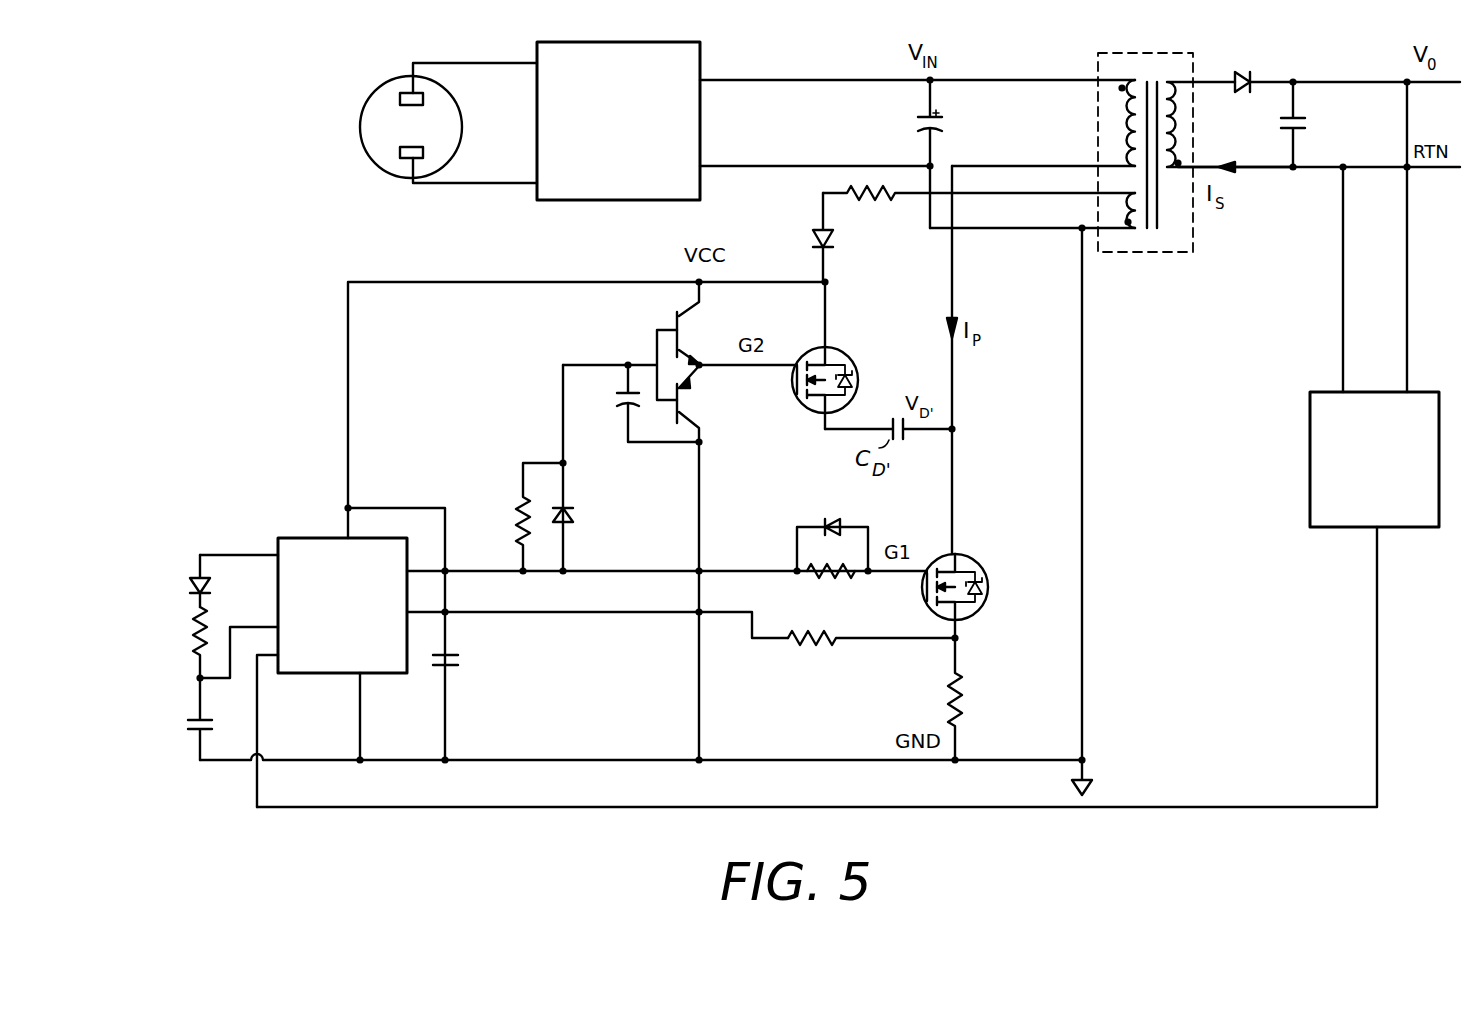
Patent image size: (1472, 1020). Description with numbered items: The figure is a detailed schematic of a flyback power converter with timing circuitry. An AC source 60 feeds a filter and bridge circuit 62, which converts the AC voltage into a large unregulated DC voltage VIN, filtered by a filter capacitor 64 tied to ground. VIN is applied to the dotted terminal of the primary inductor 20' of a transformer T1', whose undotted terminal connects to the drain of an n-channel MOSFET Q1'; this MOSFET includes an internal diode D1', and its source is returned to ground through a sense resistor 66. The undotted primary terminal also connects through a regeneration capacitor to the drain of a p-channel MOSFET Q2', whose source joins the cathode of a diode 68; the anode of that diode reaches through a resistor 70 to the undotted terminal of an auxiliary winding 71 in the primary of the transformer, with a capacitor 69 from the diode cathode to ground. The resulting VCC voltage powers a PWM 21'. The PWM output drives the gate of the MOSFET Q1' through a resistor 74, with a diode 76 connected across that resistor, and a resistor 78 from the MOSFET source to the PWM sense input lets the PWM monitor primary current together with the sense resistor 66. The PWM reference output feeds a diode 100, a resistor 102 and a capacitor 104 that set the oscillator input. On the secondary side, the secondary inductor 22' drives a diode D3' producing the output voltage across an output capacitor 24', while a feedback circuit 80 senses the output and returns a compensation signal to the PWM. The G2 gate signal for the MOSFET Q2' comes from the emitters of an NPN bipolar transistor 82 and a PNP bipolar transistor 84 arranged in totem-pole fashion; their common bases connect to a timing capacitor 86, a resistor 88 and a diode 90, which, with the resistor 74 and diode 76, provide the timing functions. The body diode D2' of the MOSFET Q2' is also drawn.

The AC source 60 is at (375, 92).
The filter and bridge circuit 62 is at (605, 42).
The filter capacitor 64 is at (918, 124).
The sense resistor 66 is at (964, 703).
The diode 68 is at (815, 232).
The capacitor 69 is at (458, 670).
The resistor 70 is at (872, 204).
The auxiliary winding 71 is at (1138, 228).
The resistor 74 is at (834, 584).
The diode 76 is at (832, 517).
The resistor 78 is at (818, 651).
The feedback circuit 80 is at (1327, 392).
The NPN bipolar transistor 82 is at (700, 317).
The PNP bipolar transistor 84 is at (700, 422).
The timing capacitor 86 is at (618, 393).
The resistor 88 is at (518, 526).
The diode 90 is at (572, 512).
The diode 100 is at (190, 578).
The resistor 102 is at (190, 632).
The capacitor 104 is at (188, 725).
The primary inductor 20' is at (1089, 123).
The PWM 21' is at (321, 627).
The secondary inductor 22' is at (1230, 127).
The output capacitor 24' is at (1325, 124).
The transformer T1' is at (1168, 157).
The diode D3' is at (1347, 59).
The n-channel MOSFET Q1' is at (991, 578).
The p-channel MOSFET Q2' is at (864, 355).
The internal diode D1' is at (1007, 597).
The body diode of Q2' D2' is at (881, 372).